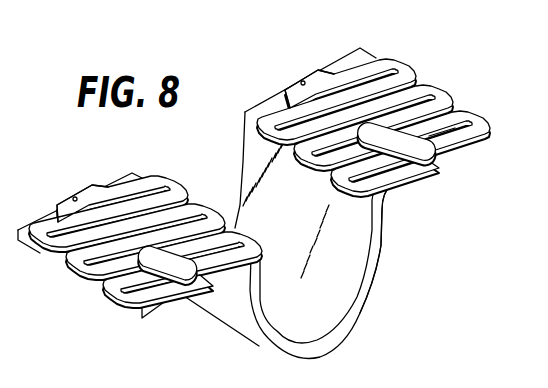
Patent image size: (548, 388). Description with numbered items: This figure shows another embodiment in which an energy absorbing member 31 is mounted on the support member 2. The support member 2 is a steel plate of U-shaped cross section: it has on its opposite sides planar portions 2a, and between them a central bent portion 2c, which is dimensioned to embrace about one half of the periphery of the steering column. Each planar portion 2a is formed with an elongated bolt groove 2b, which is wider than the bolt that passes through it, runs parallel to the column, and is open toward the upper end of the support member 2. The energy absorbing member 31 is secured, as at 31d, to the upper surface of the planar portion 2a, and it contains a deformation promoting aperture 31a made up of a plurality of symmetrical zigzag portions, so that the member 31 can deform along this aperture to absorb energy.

The support member 2 is at (252, 309).
The planar portion 2a is at (262, 112).
The bolt groove 2b is at (414, 155).
The central bent portion 2c is at (383, 239).
The energy absorbing member 31 is at (488, 121).
The deformation promoting aperture 31a is at (459, 118).
The securing point 31d is at (303, 80).